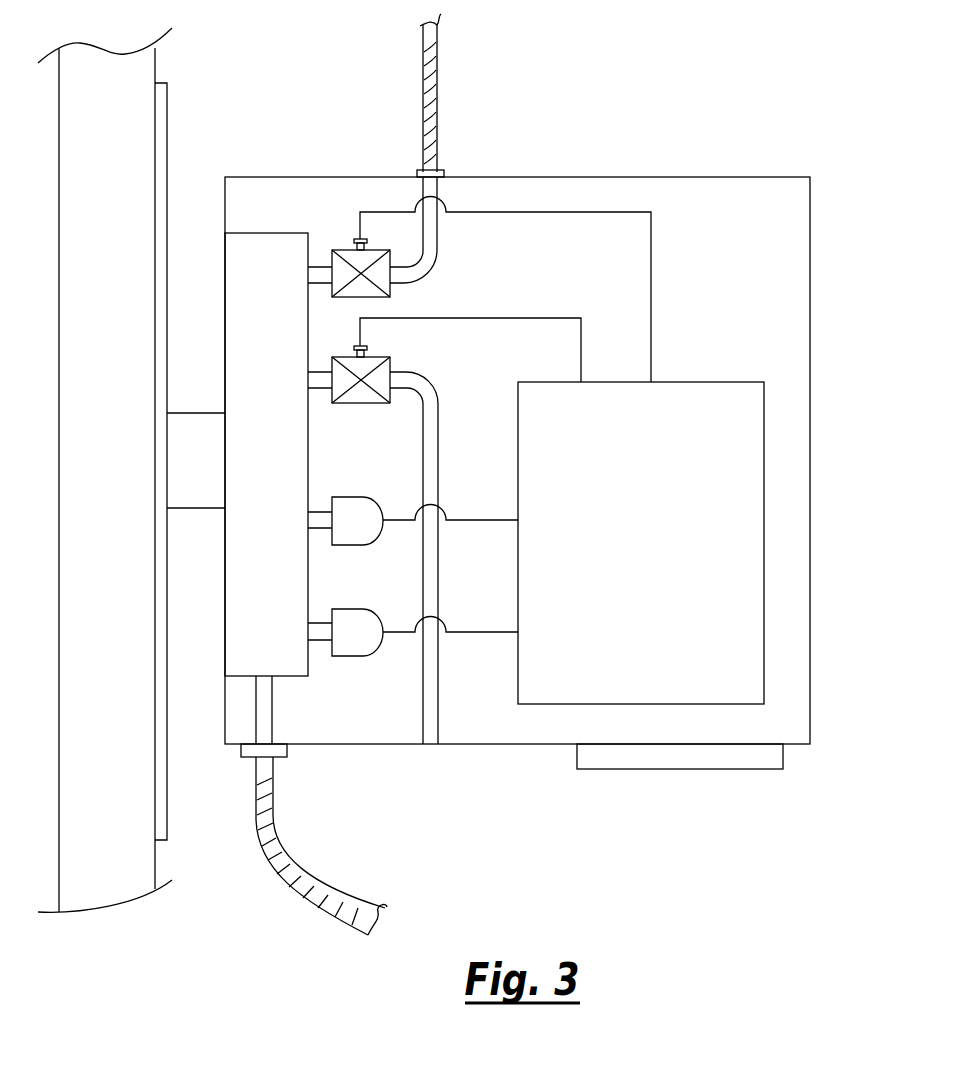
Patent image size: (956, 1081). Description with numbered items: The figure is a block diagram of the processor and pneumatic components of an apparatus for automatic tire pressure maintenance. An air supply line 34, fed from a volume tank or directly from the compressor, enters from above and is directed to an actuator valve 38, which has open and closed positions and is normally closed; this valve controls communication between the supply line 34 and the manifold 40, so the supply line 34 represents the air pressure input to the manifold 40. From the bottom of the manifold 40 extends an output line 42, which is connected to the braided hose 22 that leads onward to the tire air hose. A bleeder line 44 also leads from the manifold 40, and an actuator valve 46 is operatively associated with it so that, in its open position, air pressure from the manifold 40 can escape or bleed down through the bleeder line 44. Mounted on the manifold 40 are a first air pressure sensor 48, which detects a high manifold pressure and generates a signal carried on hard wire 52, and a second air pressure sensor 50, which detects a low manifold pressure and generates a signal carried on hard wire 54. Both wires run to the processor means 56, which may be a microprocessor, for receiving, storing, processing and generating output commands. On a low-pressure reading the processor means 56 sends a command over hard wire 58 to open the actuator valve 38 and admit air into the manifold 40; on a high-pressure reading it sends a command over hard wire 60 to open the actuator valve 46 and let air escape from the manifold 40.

The braided hose 22 is at (290, 873).
The air supply line 34 is at (433, 71).
The actuator valve 38 is at (349, 258).
The manifold 40 is at (250, 290).
The output line 42 is at (263, 716).
The bleeder line 44 is at (431, 711).
The actuator valve 46 is at (365, 397).
The first air pressure sensor 48 is at (358, 528).
The second air pressure sensor 50 is at (355, 647).
The hard wire 52 is at (491, 518).
The hard wire 54 is at (491, 632).
The processor means 56 is at (728, 499).
The hard wire 58 is at (651, 262).
The hard wire 60 is at (493, 318).